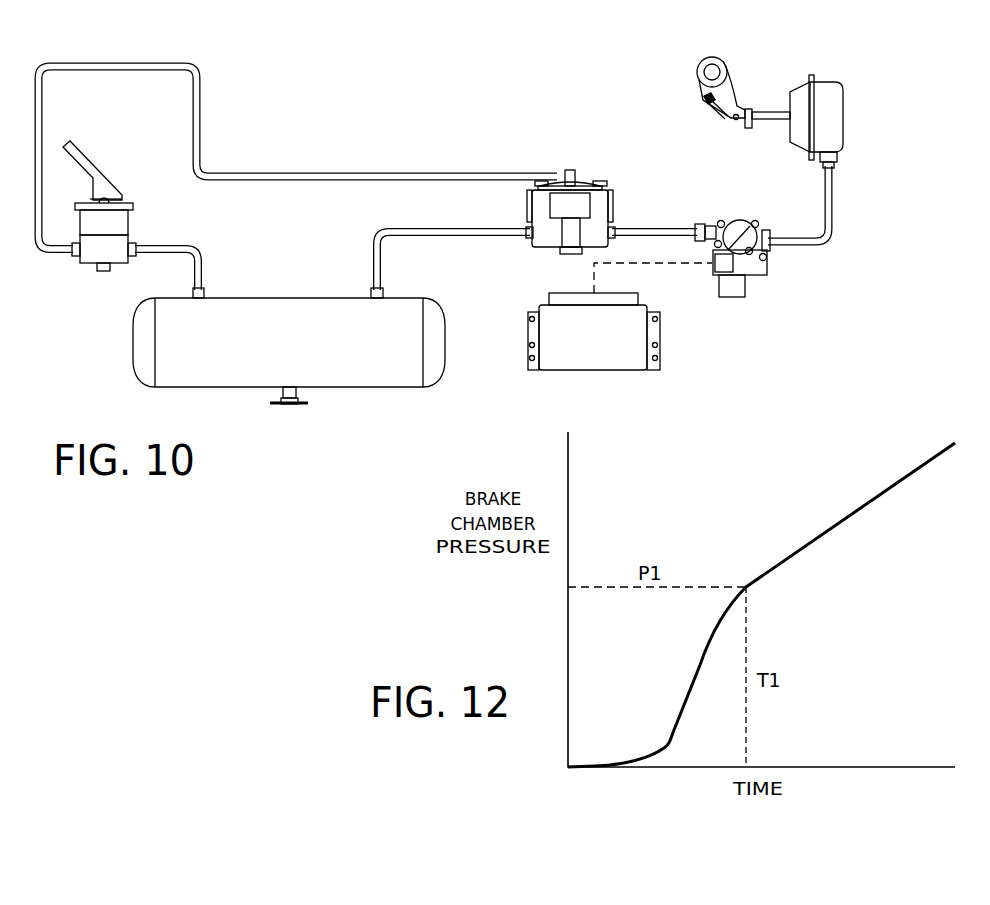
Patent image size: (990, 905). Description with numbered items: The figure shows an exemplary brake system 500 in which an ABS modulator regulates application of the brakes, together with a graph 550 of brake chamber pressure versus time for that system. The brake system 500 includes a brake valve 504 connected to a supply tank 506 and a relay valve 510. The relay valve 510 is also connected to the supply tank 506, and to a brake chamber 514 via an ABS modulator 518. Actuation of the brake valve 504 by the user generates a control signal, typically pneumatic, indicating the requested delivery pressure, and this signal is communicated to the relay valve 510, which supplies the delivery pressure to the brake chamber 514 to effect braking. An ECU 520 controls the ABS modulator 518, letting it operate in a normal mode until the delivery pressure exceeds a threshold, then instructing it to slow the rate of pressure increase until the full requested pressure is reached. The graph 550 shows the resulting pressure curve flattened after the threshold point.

In FIG. 10, the brake system 500 is at (437, 82).
In FIG. 10, the brake valve 504 is at (92, 257).
In FIG. 10, the supply tank 506 is at (432, 325).
In FIG. 10, the relay valve 510 is at (597, 202).
In FIG. 10, the brake chamber 514 is at (835, 108).
In FIG. 10, the ABS modulator 518 is at (760, 267).
In FIG. 10, the ECU 520 is at (643, 330).
In FIG. 12, the graph 550 is at (744, 486).